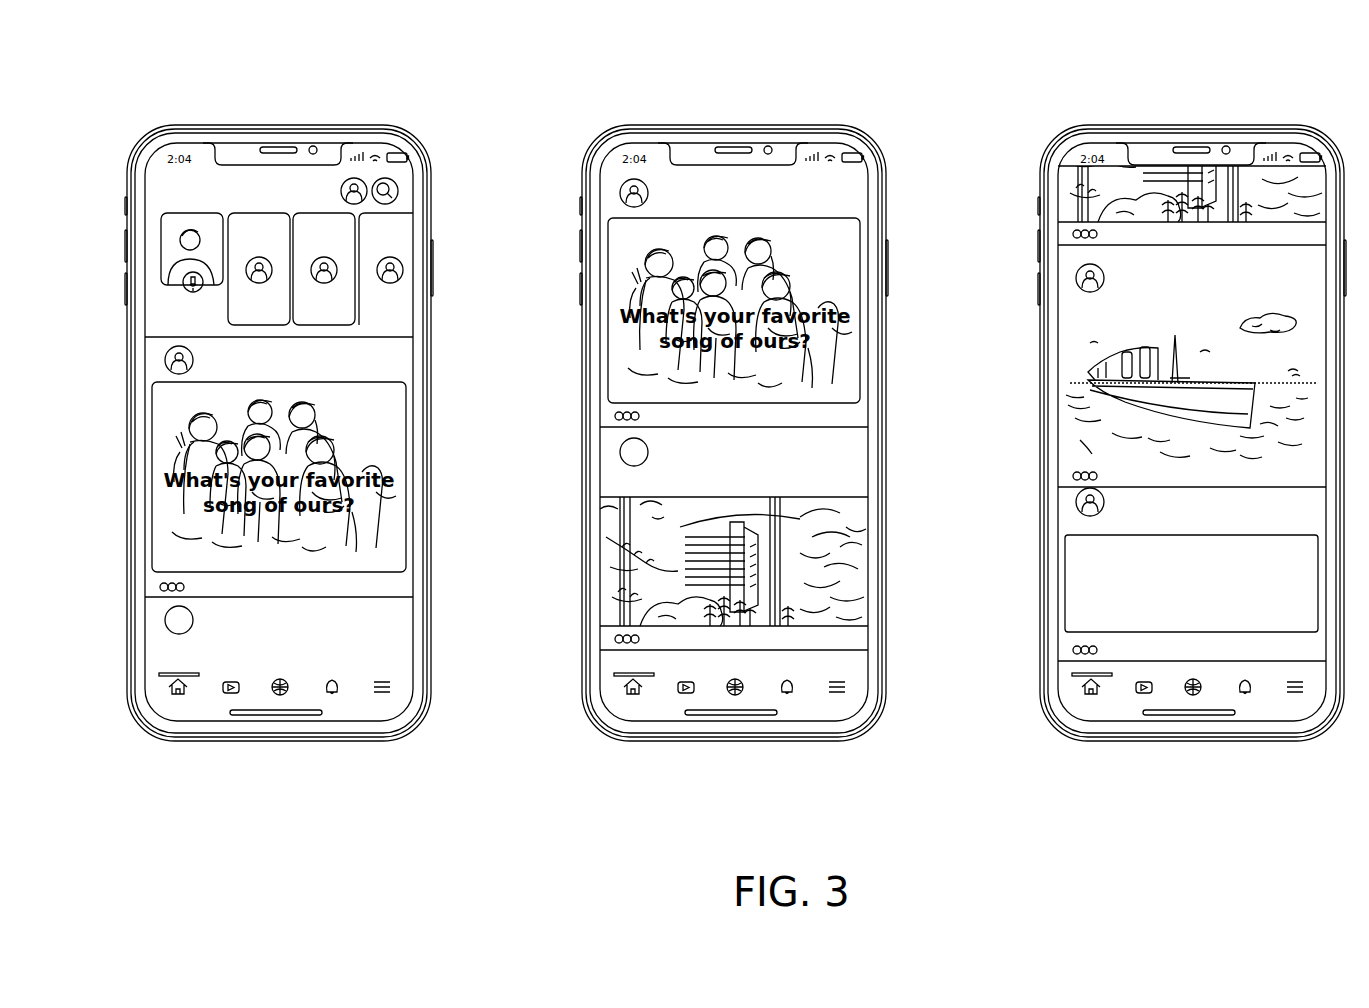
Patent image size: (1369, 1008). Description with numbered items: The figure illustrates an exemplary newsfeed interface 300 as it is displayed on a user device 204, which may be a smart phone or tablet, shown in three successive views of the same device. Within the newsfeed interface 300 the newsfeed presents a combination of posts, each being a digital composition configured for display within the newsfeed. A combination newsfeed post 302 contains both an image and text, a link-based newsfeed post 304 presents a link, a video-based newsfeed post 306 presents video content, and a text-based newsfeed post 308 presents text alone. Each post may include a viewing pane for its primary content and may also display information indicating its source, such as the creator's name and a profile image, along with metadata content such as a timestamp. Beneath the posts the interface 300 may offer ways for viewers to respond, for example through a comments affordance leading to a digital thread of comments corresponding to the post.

The user device 204 is at (143, 123).
The newsfeed interface 300 is at (319, 180).
The combination newsfeed post 302 is at (163, 497).
The link-based newsfeed post 304 is at (610, 528).
The video-based newsfeed post 306 is at (1080, 375).
The text-based newsfeed post 308 is at (1073, 622).